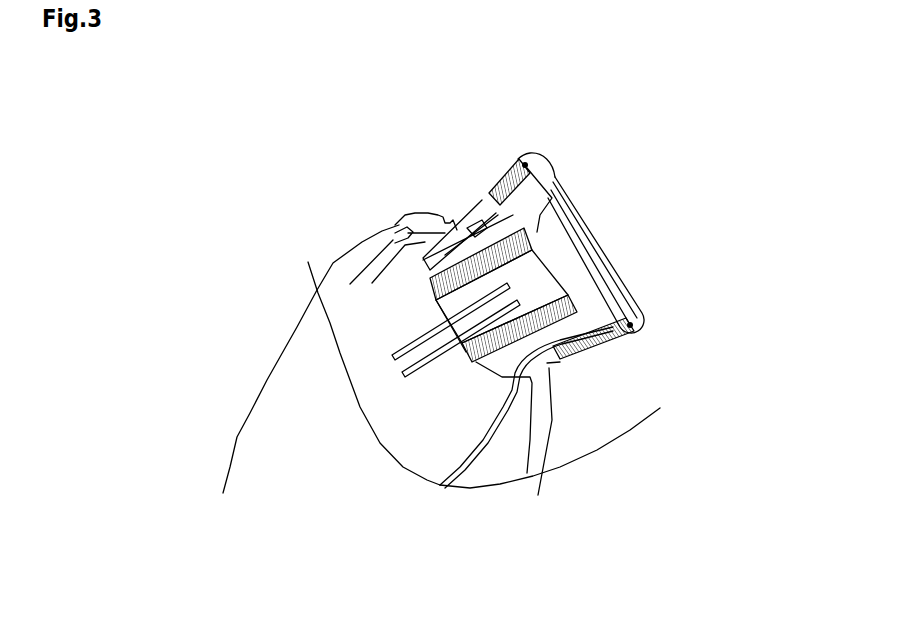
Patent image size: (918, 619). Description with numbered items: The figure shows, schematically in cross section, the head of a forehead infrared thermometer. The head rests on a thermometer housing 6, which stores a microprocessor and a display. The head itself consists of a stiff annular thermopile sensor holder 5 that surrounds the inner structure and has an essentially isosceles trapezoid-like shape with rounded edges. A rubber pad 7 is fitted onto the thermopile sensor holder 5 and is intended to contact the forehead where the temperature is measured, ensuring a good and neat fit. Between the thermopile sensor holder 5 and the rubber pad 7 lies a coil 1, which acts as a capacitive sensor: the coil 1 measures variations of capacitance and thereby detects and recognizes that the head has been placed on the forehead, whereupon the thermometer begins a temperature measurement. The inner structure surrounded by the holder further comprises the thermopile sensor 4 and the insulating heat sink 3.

The coil 1 is at (568, 222).
The insulating heat sink 3 is at (555, 298).
The thermopile sensor 4 is at (520, 288).
The thermopile sensor holder 5 is at (489, 194).
The thermometer housing 6 is at (272, 455).
The rubber pad 7 is at (542, 162).